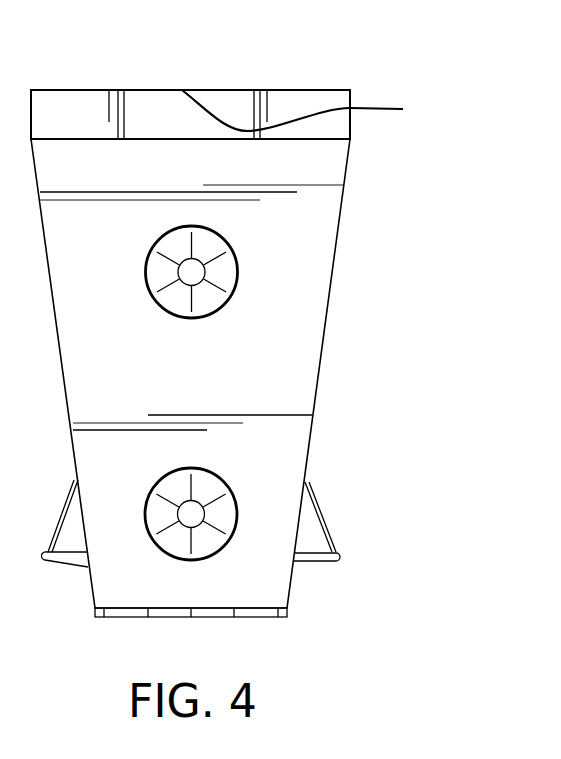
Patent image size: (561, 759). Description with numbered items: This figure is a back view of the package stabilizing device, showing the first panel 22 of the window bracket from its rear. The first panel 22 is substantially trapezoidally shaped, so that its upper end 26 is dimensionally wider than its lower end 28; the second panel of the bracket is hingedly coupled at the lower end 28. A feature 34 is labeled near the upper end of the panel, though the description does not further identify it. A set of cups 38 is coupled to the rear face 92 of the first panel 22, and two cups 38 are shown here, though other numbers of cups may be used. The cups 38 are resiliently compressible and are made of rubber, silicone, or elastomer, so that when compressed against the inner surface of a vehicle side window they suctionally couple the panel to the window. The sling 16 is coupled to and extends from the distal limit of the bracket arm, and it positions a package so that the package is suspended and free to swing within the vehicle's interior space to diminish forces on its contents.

The sling 16 is at (310, 555).
The first panel 22 is at (306, 228).
The upper end 26 is at (321, 110).
The lower end 28 is at (167, 610).
The top cap 34 is at (77, 113).
The cups 38 is at (210, 502).
The rear face 92 is at (213, 399).